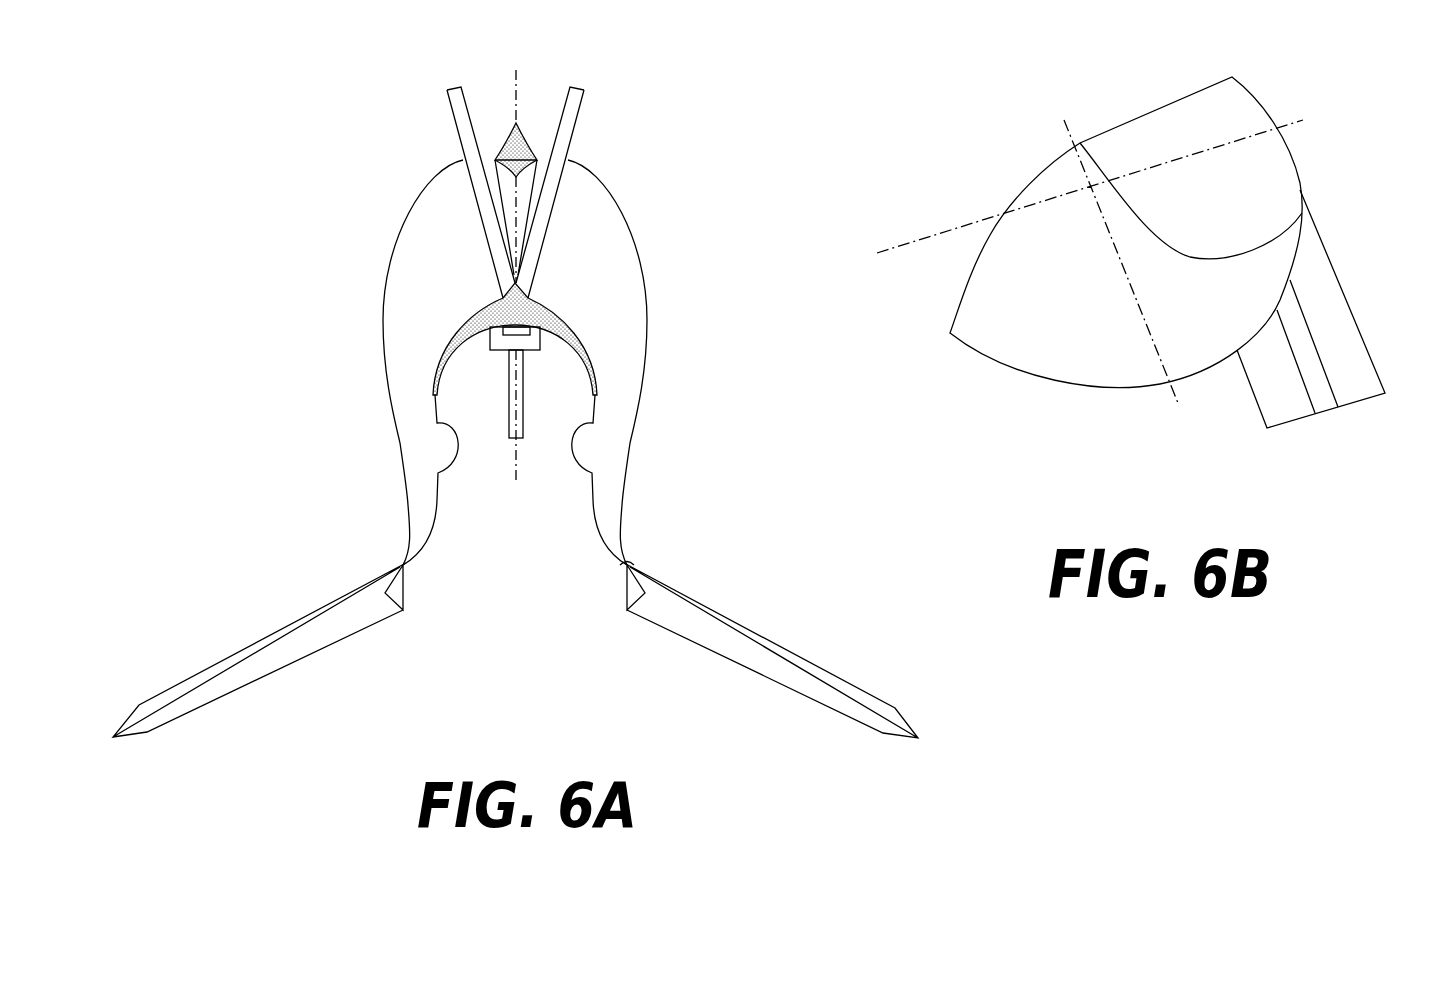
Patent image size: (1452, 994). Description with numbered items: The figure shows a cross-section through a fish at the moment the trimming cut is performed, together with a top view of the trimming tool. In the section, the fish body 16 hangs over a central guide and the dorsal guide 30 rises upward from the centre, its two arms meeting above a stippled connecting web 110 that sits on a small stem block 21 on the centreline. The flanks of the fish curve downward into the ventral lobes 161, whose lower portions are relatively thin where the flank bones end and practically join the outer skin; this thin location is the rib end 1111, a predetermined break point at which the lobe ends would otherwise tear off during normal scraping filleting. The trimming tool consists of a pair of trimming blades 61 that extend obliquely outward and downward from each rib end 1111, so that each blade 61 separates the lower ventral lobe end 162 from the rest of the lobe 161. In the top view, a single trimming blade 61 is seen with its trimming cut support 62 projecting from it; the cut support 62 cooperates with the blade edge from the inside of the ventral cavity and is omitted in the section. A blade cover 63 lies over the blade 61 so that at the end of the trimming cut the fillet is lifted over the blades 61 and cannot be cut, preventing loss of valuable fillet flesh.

In FIG. 6A, the dorsal guide 30 is at (572, 117).
In FIG. 6A, the body 16 is at (622, 237).
In FIG. 6A, the ventral lobe 161 is at (623, 432).
In FIG. 6A, the connecting web 110 is at (527, 312).
In FIG. 6A, the stem block 21 is at (533, 340).
In FIG. 6A, the lower ventral lobe end 162 is at (397, 587).
In FIG. 6A, the rib end 1111 is at (625, 565).
In FIG. 6A, the trimming blade 61 is at (187, 688).
In FIG. 6B, the trimming blade 61 is at (972, 317).
In FIG. 6A, the blade cover 63 is at (817, 678).
In FIG. 6B, the blade cover 63 is at (1273, 190).
In FIG. 6B, the trimming cut support 62 is at (1357, 355).